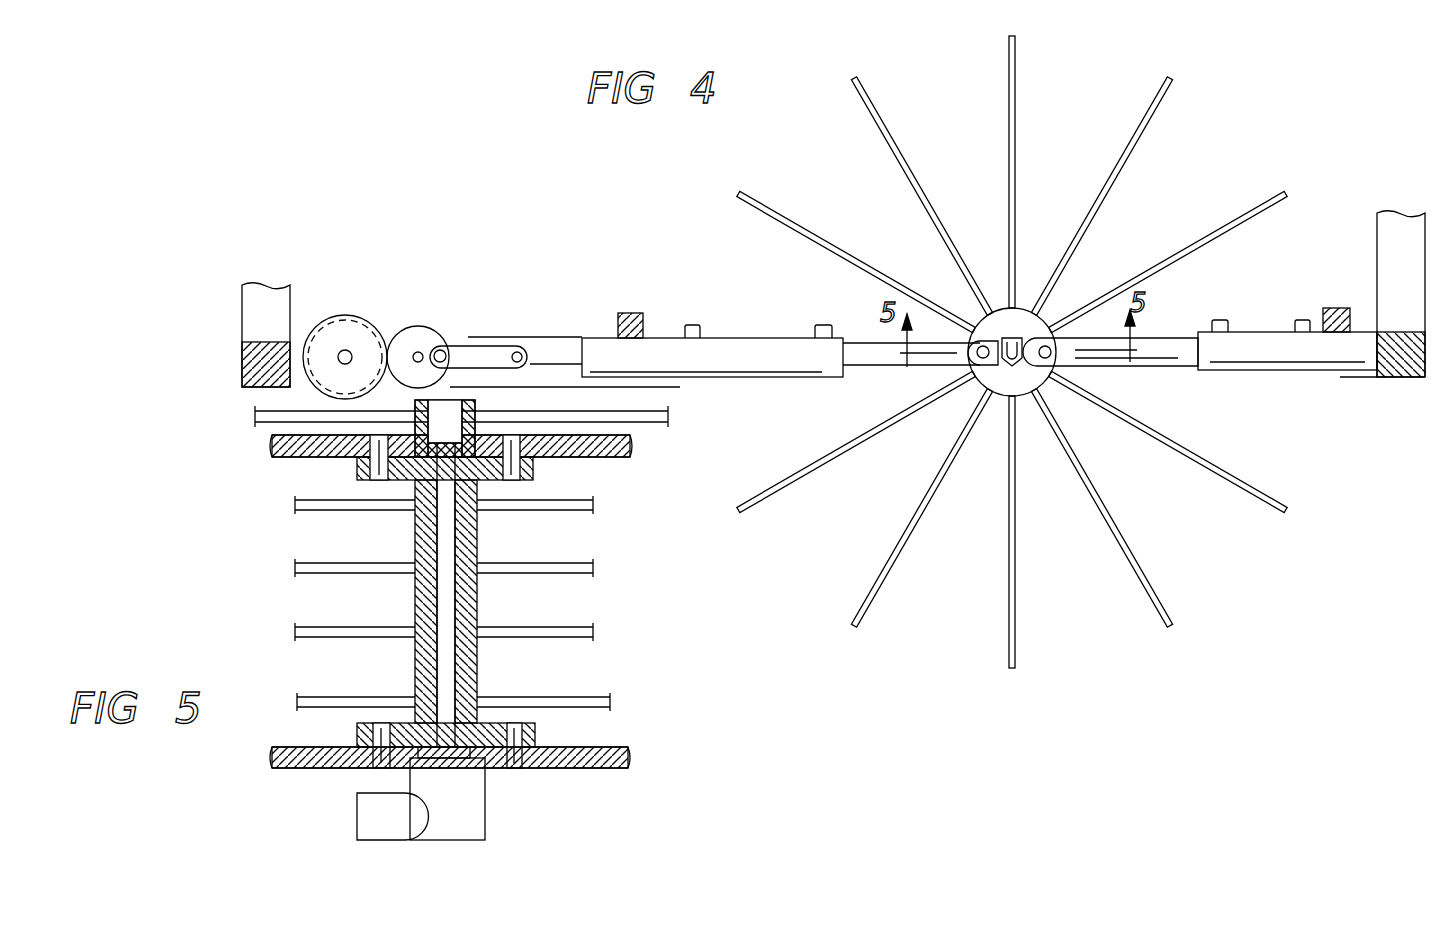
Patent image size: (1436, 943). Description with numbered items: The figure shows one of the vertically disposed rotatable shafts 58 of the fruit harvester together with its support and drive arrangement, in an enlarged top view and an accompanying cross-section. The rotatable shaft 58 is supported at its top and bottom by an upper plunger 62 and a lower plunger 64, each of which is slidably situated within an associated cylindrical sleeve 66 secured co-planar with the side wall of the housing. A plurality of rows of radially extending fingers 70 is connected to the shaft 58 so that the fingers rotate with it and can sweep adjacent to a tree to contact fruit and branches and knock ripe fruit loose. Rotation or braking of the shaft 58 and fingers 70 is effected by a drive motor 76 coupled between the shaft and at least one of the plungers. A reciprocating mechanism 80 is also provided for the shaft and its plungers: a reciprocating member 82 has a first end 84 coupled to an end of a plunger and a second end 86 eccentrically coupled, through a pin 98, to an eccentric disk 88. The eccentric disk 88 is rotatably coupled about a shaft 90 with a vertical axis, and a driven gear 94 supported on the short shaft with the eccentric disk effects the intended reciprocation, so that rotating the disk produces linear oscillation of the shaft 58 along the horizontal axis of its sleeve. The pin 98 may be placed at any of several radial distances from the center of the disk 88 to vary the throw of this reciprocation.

In FIG. 5, the rotatable shaft 58 is at (422, 523).
In FIG. 4, the upper plunger 62 is at (868, 357).
In FIG. 5, the upper plunger 62 is at (275, 453).
In FIG. 5, the lower plunger 64 is at (312, 763).
In FIG. 4, the cylindrical sleeve 66 is at (767, 345).
In FIG. 4, the fingers 70 is at (1268, 190).
In FIG. 5, the drive motor 76 is at (472, 820).
In FIG. 4, the reciprocating mechanism 80 is at (462, 297).
In FIG. 4, the reciprocating member 82 is at (565, 352).
In FIG. 4, the first end 84 is at (550, 342).
In FIG. 4, the second end 86 is at (481, 352).
In FIG. 4, the eccentric disk 88 is at (418, 352).
In FIG. 4, the shaft 90 is at (417, 334).
In FIG. 4, the driven gear 94 is at (318, 320).
In FIG. 4, the pin 98 is at (440, 350).